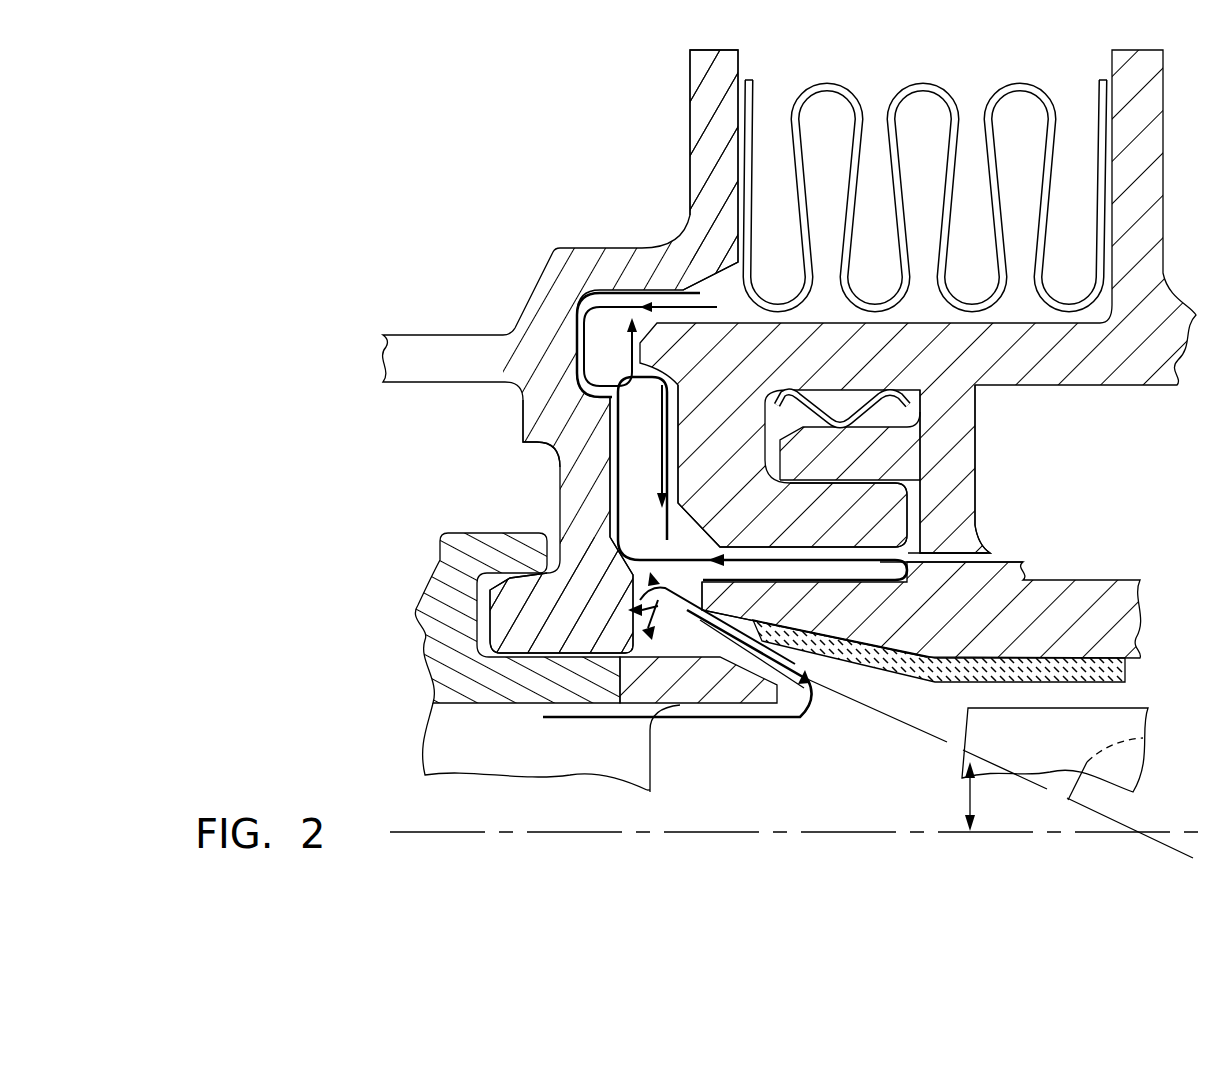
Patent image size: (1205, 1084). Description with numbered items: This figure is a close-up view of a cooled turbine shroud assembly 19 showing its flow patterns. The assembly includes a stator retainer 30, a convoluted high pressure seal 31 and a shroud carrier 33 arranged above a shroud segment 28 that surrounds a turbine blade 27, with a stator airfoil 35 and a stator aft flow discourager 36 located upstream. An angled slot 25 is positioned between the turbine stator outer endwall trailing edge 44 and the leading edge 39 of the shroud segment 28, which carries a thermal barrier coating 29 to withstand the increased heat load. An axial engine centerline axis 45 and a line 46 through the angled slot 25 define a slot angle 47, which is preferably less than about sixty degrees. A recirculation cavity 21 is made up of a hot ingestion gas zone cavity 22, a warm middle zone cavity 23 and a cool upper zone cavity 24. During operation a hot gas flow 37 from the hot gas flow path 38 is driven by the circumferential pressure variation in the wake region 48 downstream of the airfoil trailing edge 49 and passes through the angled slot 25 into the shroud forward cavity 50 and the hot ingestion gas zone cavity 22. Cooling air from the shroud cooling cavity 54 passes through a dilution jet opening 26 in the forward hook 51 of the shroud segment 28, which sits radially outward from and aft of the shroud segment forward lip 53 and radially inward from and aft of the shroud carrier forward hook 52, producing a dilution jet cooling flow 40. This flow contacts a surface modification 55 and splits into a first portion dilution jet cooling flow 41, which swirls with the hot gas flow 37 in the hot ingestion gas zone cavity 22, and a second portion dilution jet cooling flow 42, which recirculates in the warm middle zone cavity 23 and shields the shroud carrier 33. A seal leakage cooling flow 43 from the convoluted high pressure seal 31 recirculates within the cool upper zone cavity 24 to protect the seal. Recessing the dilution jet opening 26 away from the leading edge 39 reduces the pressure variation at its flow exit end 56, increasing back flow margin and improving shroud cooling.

The cooled turbine shroud assembly 19 is at (452, 158).
The recirculation cavity 21 is at (608, 430).
The hot ingestion gas zone cavity 22 is at (630, 604).
The warm middle zone cavity 23 is at (608, 473).
The cool upper zone cavity 24 is at (590, 310).
The angled slot 25 is at (760, 662).
The dilution jet opening 26 is at (955, 562).
The turbine blade 27 is at (1049, 741).
The shroud segment 28 is at (1093, 606).
The thermal barrier coating 29 is at (1093, 668).
The stator retainer 30 is at (541, 408).
The convoluted high pressure seal 31 is at (859, 278).
The shroud carrier 33 is at (898, 365).
The stator airfoil 35 is at (519, 758).
The stator aft flow discourager 36 is at (630, 690).
The hot gas flow 37 is at (787, 720).
The hot gas flow path 38 is at (698, 763).
The leading edge of the shroud segment 39 is at (843, 682).
The dilution jet cooling flow 40 is at (853, 562).
The first portion dilution jet cooling flow 41 is at (720, 591).
The second portion dilution jet cooling flow 42 is at (693, 556).
The seal leakage cooling flow 43 is at (698, 300).
The turbine stator outer endwall trailing edge 44 is at (800, 717).
The axial engine centerline axis 45 is at (488, 830).
The line through the angled slot 46 is at (1142, 741).
The slot angle 47 is at (968, 797).
The wake region 48 is at (786, 790).
The airfoil trailing edge 49 is at (648, 788).
The shroud forward cavity 50 is at (700, 645).
The forward hook of the shroud segment 51 is at (940, 493).
The shroud carrier forward hook 52 is at (796, 528).
The shroud segment forward lip 53 is at (824, 625).
The shroud cooling cavity 54 is at (1071, 495).
The surface modification 55 is at (665, 378).
The flow exit end of the dilution jet opening 56 is at (907, 517).